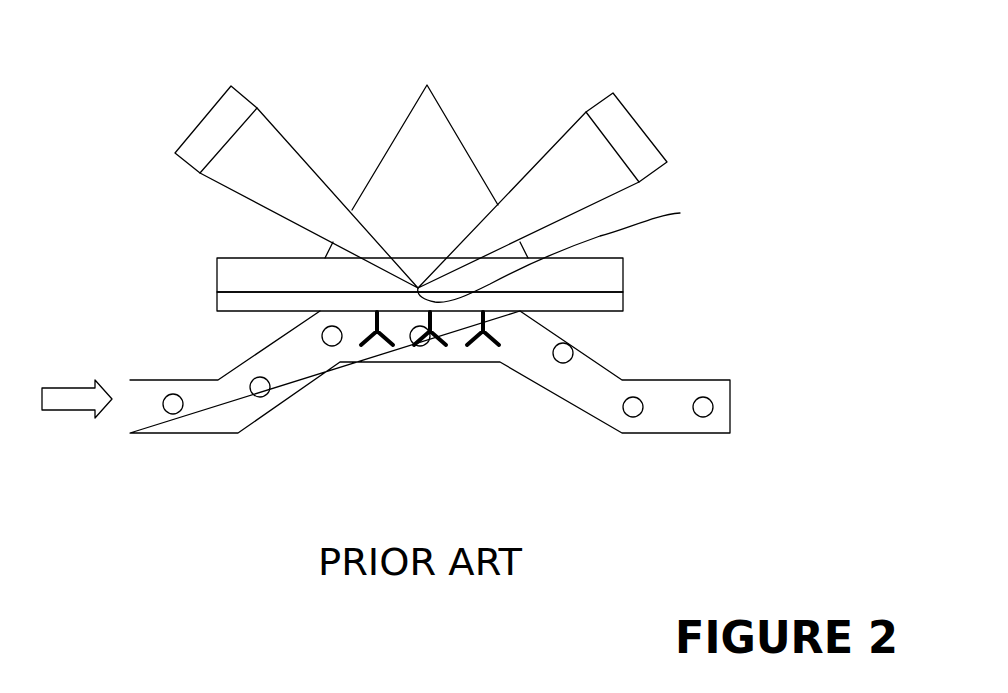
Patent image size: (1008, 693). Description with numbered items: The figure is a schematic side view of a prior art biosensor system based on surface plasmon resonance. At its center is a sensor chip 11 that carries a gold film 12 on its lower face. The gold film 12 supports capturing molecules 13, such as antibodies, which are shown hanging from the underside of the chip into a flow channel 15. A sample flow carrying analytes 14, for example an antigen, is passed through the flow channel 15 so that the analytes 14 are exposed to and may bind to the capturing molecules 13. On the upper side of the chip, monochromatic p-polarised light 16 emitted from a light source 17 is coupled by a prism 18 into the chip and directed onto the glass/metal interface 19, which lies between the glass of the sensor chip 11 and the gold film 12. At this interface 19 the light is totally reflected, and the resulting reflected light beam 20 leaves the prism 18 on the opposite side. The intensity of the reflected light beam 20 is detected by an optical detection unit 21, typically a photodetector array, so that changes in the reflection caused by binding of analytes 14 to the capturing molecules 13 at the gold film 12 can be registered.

The sensor chip 11 is at (200, 265).
The gold film 12 is at (237, 304).
The capturing molecules 13 is at (382, 340).
The analytes 14 is at (173, 414).
The flow channel 15 is at (142, 413).
The monochromatic p-polarised light 16 is at (283, 163).
The light source 17 is at (222, 123).
The prism 18 is at (422, 168).
The glass/metal interface 19 is at (566, 247).
The reflected light beam 20 is at (555, 182).
The optical detection unit 21 is at (632, 138).